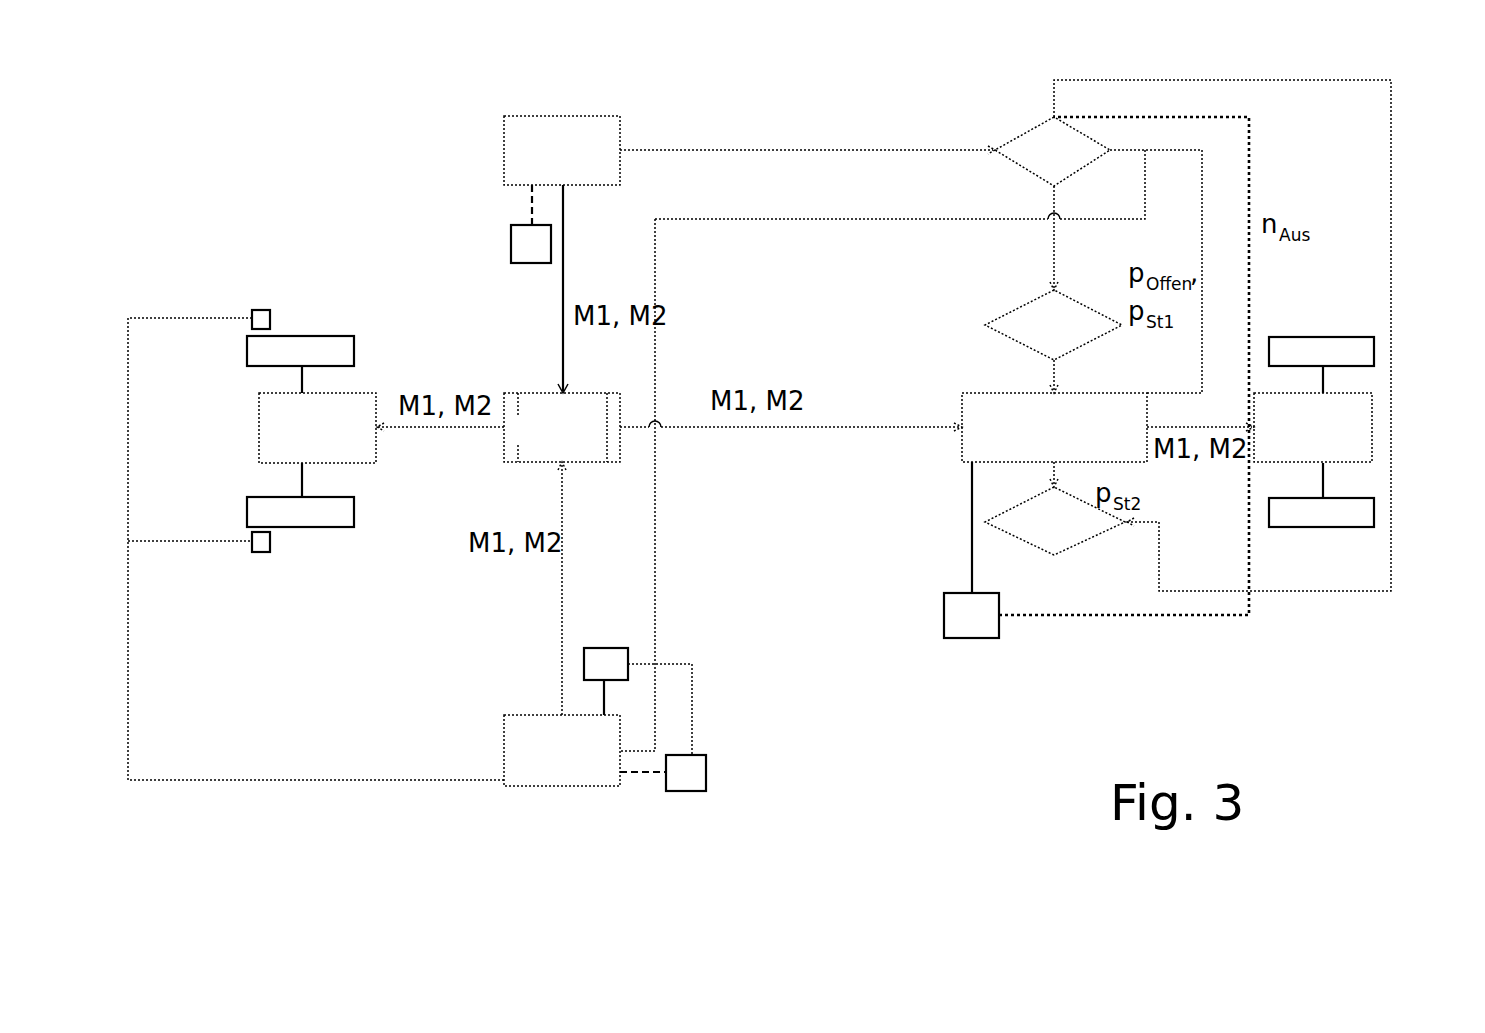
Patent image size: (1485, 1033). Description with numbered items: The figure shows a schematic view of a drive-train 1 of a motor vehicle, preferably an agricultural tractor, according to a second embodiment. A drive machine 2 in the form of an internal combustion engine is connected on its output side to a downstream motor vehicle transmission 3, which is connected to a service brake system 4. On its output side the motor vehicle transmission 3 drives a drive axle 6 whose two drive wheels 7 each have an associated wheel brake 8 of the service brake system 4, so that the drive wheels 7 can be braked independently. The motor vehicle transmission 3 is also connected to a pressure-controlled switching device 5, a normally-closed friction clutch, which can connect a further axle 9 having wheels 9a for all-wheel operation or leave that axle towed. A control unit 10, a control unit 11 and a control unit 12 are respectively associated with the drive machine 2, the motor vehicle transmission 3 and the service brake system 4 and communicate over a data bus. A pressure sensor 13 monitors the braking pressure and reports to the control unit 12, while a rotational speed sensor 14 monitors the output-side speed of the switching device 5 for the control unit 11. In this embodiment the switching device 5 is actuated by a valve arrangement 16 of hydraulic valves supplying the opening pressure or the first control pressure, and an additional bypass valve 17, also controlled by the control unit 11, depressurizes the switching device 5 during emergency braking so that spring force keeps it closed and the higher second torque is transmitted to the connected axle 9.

The drive-train 1 is at (352, 224).
The drive machine 2 is at (504, 133).
The motor vehicle transmission 3 is at (532, 378).
The service brake system 4 is at (525, 745).
The pressure-controlled switching device 5 is at (1013, 402).
The drive axle 6 is at (262, 435).
The drive wheels 7 is at (335, 336).
The wheel brake 8 is at (253, 312).
The further axle 9 is at (1362, 432).
The wheels 9a is at (1357, 342).
The control unit 10 is at (511, 246).
The control unit 11 is at (1038, 135).
The control unit 12 is at (707, 773).
The pressure sensor 13 is at (603, 652).
The rotational speed sensor 14 is at (975, 625).
The valve arrangement 16 is at (1028, 312).
The bypass valve 17 is at (1065, 528).